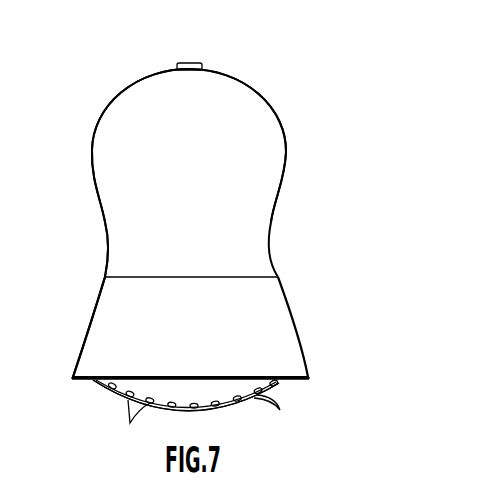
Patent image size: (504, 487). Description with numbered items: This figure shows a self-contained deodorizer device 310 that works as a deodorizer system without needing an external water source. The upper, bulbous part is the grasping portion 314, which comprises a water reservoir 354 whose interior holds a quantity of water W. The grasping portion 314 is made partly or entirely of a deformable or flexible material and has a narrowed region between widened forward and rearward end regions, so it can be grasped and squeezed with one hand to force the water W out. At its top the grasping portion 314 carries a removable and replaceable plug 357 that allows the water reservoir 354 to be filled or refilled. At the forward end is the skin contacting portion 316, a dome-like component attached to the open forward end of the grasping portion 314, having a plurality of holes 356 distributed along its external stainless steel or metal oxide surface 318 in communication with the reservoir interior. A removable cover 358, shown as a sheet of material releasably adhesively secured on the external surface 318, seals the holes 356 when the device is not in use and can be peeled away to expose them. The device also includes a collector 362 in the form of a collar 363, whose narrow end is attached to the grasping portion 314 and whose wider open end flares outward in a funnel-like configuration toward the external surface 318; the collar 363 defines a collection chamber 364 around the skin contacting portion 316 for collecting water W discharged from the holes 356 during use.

The deodorizer device 310 is at (88, 94).
The grasping portion 314 is at (84, 181).
The water reservoir 354 is at (270, 117).
The plug 357 is at (190, 63).
The water W is at (258, 179).
The collar 363 is at (95, 332).
The collector 362 is at (310, 324).
The collection chamber 364 is at (83, 388).
The skin contacting portion 316 is at (107, 405).
The external surface 318 is at (290, 392).
The holes 356 is at (134, 427).
The cover 358 is at (234, 414).